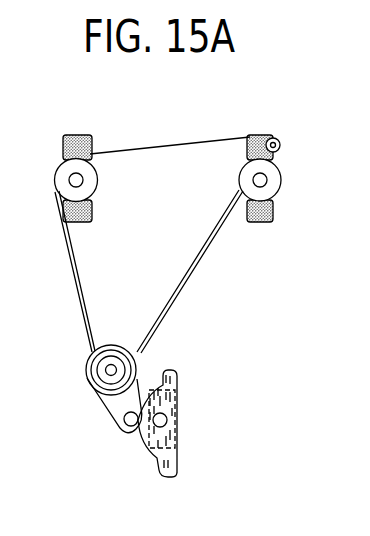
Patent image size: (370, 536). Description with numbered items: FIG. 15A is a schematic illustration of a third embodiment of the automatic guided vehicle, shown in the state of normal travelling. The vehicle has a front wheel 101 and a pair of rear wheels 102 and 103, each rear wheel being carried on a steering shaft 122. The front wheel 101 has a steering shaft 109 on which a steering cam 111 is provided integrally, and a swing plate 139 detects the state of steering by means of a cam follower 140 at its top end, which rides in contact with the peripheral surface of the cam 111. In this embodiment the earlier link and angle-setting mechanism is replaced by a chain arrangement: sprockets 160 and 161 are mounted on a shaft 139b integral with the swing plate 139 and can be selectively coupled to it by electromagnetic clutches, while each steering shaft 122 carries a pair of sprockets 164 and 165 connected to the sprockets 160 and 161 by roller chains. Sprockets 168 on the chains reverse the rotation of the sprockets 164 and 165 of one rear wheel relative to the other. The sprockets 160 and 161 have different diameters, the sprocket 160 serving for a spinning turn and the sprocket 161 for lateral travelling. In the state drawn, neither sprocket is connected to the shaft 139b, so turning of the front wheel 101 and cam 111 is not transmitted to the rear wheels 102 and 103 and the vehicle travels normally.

The front wheel 101 is at (173, 398).
The rear wheel 102 is at (263, 222).
The rear wheel 103 is at (68, 135).
The steering shaft 109 is at (163, 422).
The steering cam 111 is at (177, 455).
The steering shaft 122 is at (73, 182).
The swing plate 139 is at (92, 392).
The shaft 139b is at (112, 362).
The cam follower 140 is at (127, 422).
The sprocket 160 is at (88, 343).
The sprocket 161 is at (133, 352).
The sprocket 164 is at (168, 194).
The sprocket 165 is at (246, 174).
The sprocket 168 is at (280, 142).